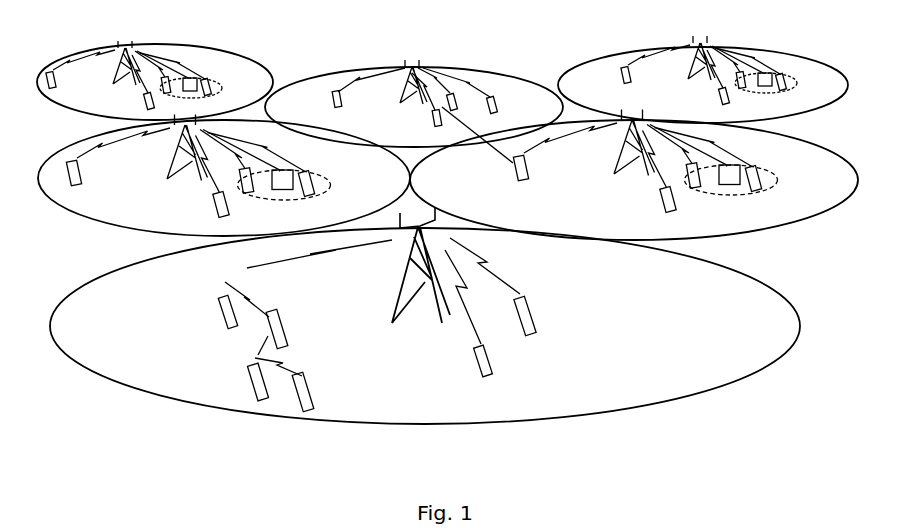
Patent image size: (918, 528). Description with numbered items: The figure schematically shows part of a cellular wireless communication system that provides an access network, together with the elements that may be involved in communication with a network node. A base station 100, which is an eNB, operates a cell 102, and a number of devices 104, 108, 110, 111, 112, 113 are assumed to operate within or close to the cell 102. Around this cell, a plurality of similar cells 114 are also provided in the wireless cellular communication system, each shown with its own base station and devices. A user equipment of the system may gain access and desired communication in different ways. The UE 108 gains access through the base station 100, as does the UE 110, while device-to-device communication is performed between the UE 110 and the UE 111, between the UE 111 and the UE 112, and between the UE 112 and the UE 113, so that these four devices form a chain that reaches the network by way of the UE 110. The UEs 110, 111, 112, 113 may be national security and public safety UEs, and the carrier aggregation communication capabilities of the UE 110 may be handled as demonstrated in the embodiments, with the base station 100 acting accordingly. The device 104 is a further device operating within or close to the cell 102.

The base station 100 is at (420, 307).
The cell 102 is at (352, 317).
The device 104 is at (525, 336).
The UE 108 is at (477, 376).
The UE 110 is at (222, 317).
The UE 111 is at (268, 330).
The UE 112 is at (252, 380).
The UE 113 is at (299, 384).
The similar cells 114 is at (771, 255).